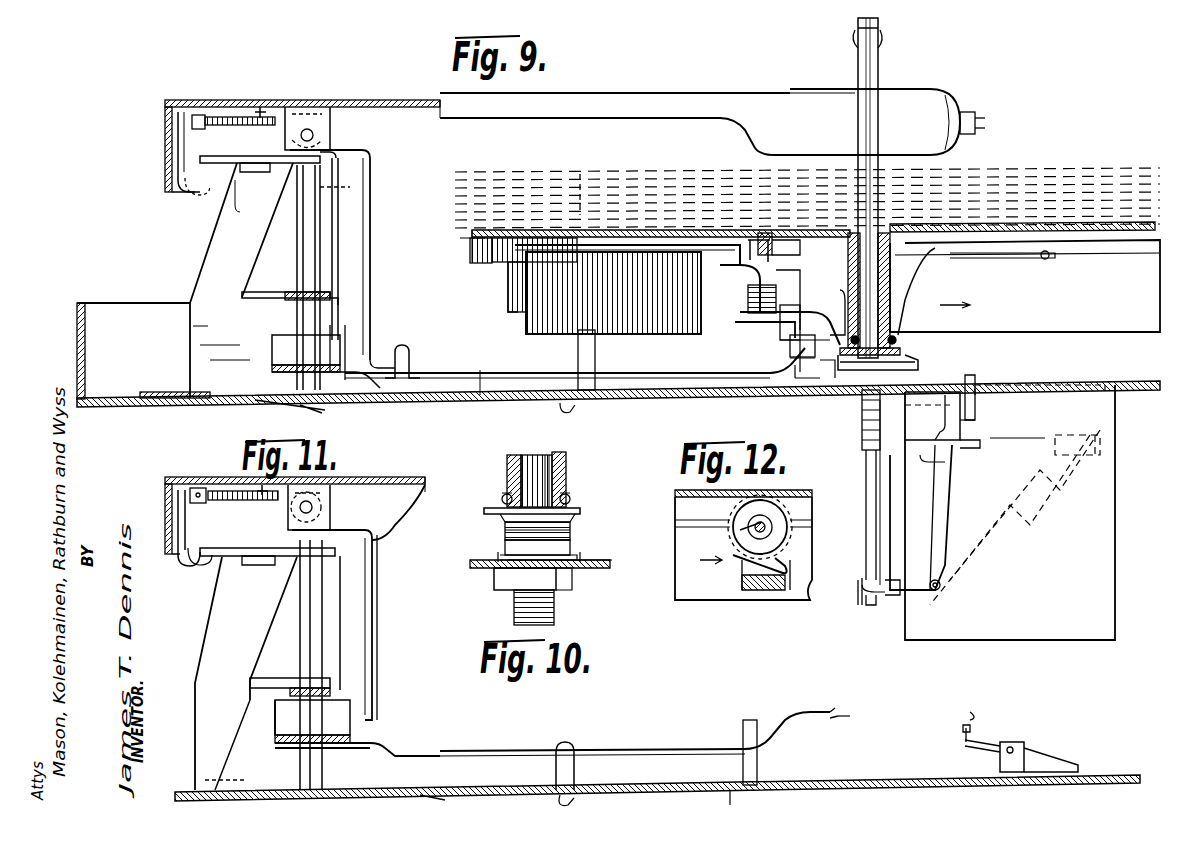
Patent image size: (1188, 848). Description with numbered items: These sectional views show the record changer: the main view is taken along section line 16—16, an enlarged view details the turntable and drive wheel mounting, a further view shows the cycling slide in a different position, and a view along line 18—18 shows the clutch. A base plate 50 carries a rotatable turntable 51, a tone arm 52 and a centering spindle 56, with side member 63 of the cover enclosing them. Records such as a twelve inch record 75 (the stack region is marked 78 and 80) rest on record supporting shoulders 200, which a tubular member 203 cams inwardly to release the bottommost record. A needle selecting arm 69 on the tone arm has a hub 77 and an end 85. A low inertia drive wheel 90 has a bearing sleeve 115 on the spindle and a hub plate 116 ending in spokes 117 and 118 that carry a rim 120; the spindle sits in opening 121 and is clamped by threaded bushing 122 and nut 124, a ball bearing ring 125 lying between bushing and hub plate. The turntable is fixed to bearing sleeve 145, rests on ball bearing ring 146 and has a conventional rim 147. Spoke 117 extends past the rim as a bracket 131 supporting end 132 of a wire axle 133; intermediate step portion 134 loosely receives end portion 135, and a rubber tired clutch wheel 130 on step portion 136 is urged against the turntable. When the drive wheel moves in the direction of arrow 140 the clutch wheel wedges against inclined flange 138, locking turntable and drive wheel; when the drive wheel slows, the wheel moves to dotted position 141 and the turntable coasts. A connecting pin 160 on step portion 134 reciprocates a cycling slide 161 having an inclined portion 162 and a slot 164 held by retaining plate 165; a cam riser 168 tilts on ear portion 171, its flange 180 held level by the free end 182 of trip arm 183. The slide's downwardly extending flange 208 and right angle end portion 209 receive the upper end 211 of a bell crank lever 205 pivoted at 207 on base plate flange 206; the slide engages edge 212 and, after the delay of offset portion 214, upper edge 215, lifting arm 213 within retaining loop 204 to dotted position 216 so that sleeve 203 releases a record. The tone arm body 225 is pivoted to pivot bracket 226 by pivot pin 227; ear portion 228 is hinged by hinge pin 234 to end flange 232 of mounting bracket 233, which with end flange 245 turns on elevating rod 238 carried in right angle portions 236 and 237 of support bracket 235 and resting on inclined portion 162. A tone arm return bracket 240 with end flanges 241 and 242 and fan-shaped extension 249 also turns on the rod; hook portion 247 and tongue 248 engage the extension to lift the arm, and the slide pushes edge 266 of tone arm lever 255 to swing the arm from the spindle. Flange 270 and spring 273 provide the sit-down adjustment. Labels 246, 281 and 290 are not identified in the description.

In FIG. 9, the section line 16 is at (845, 320).
In FIG. 9, the section line 18 is at (776, 195).
In FIG. 9, the base plate 50 is at (648, 398).
In FIG. 11, the base plate 50 is at (840, 783).
In FIG. 10, the base plate 50 is at (487, 568).
In FIG. 9, the turntable 51 is at (1072, 240).
In FIG. 12, the turntable 51 is at (800, 492).
In FIG. 9, the tone arm 52 is at (583, 88).
In FIG. 9, the centering spindle 56 is at (880, 68).
In FIG. 10, the centering spindle 56 is at (507, 470).
In FIG. 9, the side member 63 is at (88, 303).
In FIG. 9, the needle selecting arm 69 is at (989, 116).
In FIG. 9, the record 75 is at (448, 236).
In FIG. 9, the hub of needle selecting arm 77 is at (968, 112).
In FIG. 9, the fluid level 78 is at (495, 176).
In FIG. 9, the fluid body 80 is at (606, 172).
In FIG. 9, the end of needle selecting arm 85 is at (992, 131).
In FIG. 9, the low inertia drive wheel 90 is at (1075, 340).
In FIG. 12, the low inertia drive wheel 90 is at (796, 608).
In FIG. 9, the bearing sleeve 115 is at (930, 278).
In FIG. 10, the bearing sleeve 115 is at (565, 474).
In FIG. 10, the hub plate 116 is at (502, 500).
In FIG. 9, the spoke 117 is at (635, 272).
In FIG. 9, the spoke 118 is at (1000, 260).
In FIG. 9, the rim 120 is at (578, 365).
In FIG. 11, the rim 120 is at (656, 763).
In FIG. 12, the rim 120 is at (758, 600).
In FIG. 10, the opening 121 is at (515, 575).
In FIG. 9, the threaded bushing 122 is at (918, 366).
In FIG. 10, the threaded bushing 122 is at (505, 530).
In FIG. 9, the nut 124 is at (862, 420).
In FIG. 10, the nut 124 is at (560, 598).
In FIG. 10, the ball bearing ring 125 is at (572, 530).
In FIG. 9, the rubber tired clutch wheel 130 is at (774, 252).
In FIG. 12, the rubber tired clutch wheel 130 is at (780, 520).
In FIG. 9, the bracket 131 is at (510, 305).
In FIG. 9, the end of wire axle 132 is at (522, 274).
In FIG. 9, the wire axle 133 is at (585, 248).
In FIG. 9, the intermediate step portion 134 is at (765, 322).
In FIG. 12, the intermediate step portion 134 is at (748, 590).
In FIG. 9, the end portion of wire axle 135 is at (805, 305).
In FIG. 9, the step portion of wire axle 136 is at (752, 270).
In FIG. 12, the step portion of wire axle 136 is at (745, 530).
In FIG. 9, the inclined flange portion 138 is at (745, 312).
In FIG. 12, the inclined flange portion 138 is at (790, 568).
In FIG. 12, the arrow 140 is at (702, 568).
In FIG. 12, the disengaged clutch wheel position 141 is at (740, 506).
In FIG. 9, the bearing sleeve 145 is at (892, 256).
In FIG. 10, the bearing sleeve 145 is at (566, 460).
In FIG. 9, the ball bearing ring 146 is at (905, 342).
In FIG. 10, the ball bearing ring 146 is at (571, 501).
In FIG. 9, the rim 147 is at (480, 263).
In FIG. 9, the connecting pin 160 is at (775, 395).
In FIG. 9, the cycling slide 161 is at (700, 395).
In FIG. 11, the cycling slide 161 is at (893, 776).
In FIG. 10, the cycling slide 161 is at (615, 562).
In FIG. 9, the inclined portion 162 is at (300, 408).
In FIG. 11, the inclined portion 162 is at (448, 802).
In FIG. 10, the slot 164 is at (572, 548).
In FIG. 10, the retaining plate 165 is at (495, 555).
In FIG. 9, the cam riser plate 168 is at (845, 392).
In FIG. 11, the cam riser plate 168 is at (985, 742).
In FIG. 11, the upstanding ear portion 171 is at (1040, 762).
In FIG. 9, the upstanding flange 180 is at (810, 392).
In FIG. 11, the upstanding flange 180 is at (968, 714).
In FIG. 9, the free end of trip arm 182 is at (803, 359).
In FIG. 11, the free end of trip arm 182 is at (800, 712).
In FIG. 9, the trip arm 183 is at (478, 372).
In FIG. 11, the trip arm 183 is at (620, 749).
In FIG. 9, the record supporting shoulders 200 is at (855, 45).
In FIG. 9, the tubular member 203 is at (878, 498).
In FIG. 9, the U-shaped retaining loop 204 is at (870, 605).
In FIG. 9, the bell crank lever 205 is at (945, 505).
In FIG. 9, the downwardly extending flange 206 is at (1100, 532).
In FIG. 9, the pivot 207 is at (942, 588).
In FIG. 9, the downwardly extending flange 208 is at (965, 415).
In FIG. 9, the right angle end portion 209 is at (945, 475).
In FIG. 9, the upper end of bell crank lever 211 is at (975, 430).
In FIG. 9, the edge of bell crank 212 is at (960, 420).
In FIG. 9, the arm of bell crank lever 213 is at (892, 598).
In FIG. 9, the offset portion 214 is at (978, 446).
In FIG. 9, the upper edge of bell crank lever 215 is at (978, 380).
In FIG. 9, the raised bell crank position 216 is at (1025, 512).
In FIG. 9, the tone arm body 225 is at (405, 100).
In FIG. 11, the tone arm body 225 is at (392, 473).
In FIG. 9, the tone arm pivot bracket 226 is at (203, 118).
In FIG. 11, the tone arm pivot bracket 226 is at (200, 490).
In FIG. 9, the pivot pin 227 is at (262, 108).
In FIG. 11, the pivot pin 227 is at (262, 488).
In FIG. 9, the downwardly extending ear portion 228 is at (330, 112).
In FIG. 11, the downwardly extending ear portion 228 is at (330, 490).
In FIG. 9, the end flange 232 is at (355, 150).
In FIG. 11, the end flange 232 is at (380, 530).
In FIG. 9, the tone arm mounting bracket 233 is at (370, 250).
In FIG. 11, the tone arm mounting bracket 233 is at (372, 578).
In FIG. 9, the hinge pin 234 is at (308, 128).
In FIG. 11, the hinge pin 234 is at (315, 508).
In FIG. 9, the tone arm support bracket 235 is at (215, 257).
In FIG. 11, the tone arm support bracket 235 is at (222, 645).
In FIG. 9, the right angle portion 236 is at (258, 170).
In FIG. 11, the right angle portion 236 is at (270, 567).
In FIG. 9, the right angle portion 237 is at (272, 298).
In FIG. 11, the right angle portion 237 is at (272, 678).
In FIG. 9, the elevating rod 238 is at (297, 250).
In FIG. 11, the elevating rod 238 is at (322, 596).
In FIG. 9, the tone arm return bracket 240 is at (340, 203).
In FIG. 11, the tone arm return bracket 240 is at (345, 665).
In FIG. 9, the end flange 241 is at (338, 165).
In FIG. 9, the end flange 242 is at (338, 302).
In FIG. 11, the end flange 242 is at (312, 721).
In FIG. 9, the right angle end flange 245 is at (400, 360).
In FIG. 9, the inner plate 246 is at (180, 152).
In FIG. 11, the inner plate 246 is at (185, 530).
In FIG. 9, the upturned hook portion 247 is at (190, 192).
In FIG. 11, the upturned hook portion 247 is at (192, 567).
In FIG. 9, the tongue portion 248 is at (240, 210).
In FIG. 9, the fan-shaped extension 249 is at (235, 156).
In FIG. 11, the fan-shaped extension 249 is at (258, 556).
In FIG. 9, the tone arm lever 255 is at (308, 352).
In FIG. 11, the tone arm lever 255 is at (325, 750).
In FIG. 9, the edge of tone arm lever 266 is at (272, 372).
In FIG. 9, the downwardly extending flange 270 is at (190, 122).
In FIG. 11, the downwardly extending flange 270 is at (200, 504).
In FIG. 9, the spring 273 is at (230, 117).
In FIG. 11, the spring 273 is at (240, 500).
In FIG. 11, the block face 281 is at (275, 718).
In FIG. 11, the rod end 290 is at (853, 713).